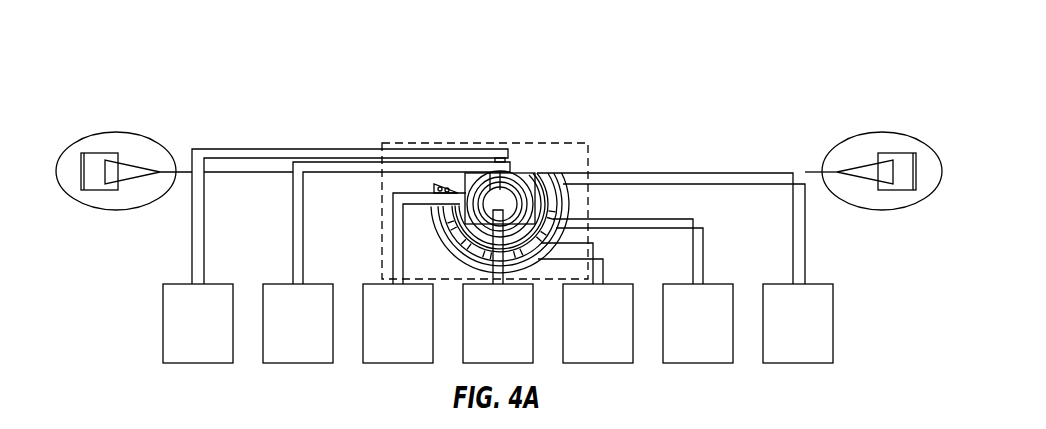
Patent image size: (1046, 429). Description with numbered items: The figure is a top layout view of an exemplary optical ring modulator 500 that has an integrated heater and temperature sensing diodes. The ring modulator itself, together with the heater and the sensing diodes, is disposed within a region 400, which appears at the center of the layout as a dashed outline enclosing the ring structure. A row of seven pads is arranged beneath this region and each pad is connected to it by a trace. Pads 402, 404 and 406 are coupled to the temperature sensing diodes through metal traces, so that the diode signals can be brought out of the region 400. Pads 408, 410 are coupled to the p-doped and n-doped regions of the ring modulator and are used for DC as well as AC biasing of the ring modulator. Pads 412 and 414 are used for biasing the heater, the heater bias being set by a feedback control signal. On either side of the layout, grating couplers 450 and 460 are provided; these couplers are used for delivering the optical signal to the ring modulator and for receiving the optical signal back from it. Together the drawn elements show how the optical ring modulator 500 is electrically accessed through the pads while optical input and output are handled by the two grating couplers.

The optical ring modulator 500 is at (645, 65).
The region 400 is at (497, 143).
The pad 402 is at (615, 335).
The pad 404 is at (715, 335).
The pad 406 is at (815, 335).
The pad 408 is at (415, 335).
The pad 410 is at (515, 335).
The pad 412 is at (215, 335).
The pad 414 is at (315, 335).
The grating coupler 450 is at (878, 132).
The grating coupler 460 is at (120, 132).